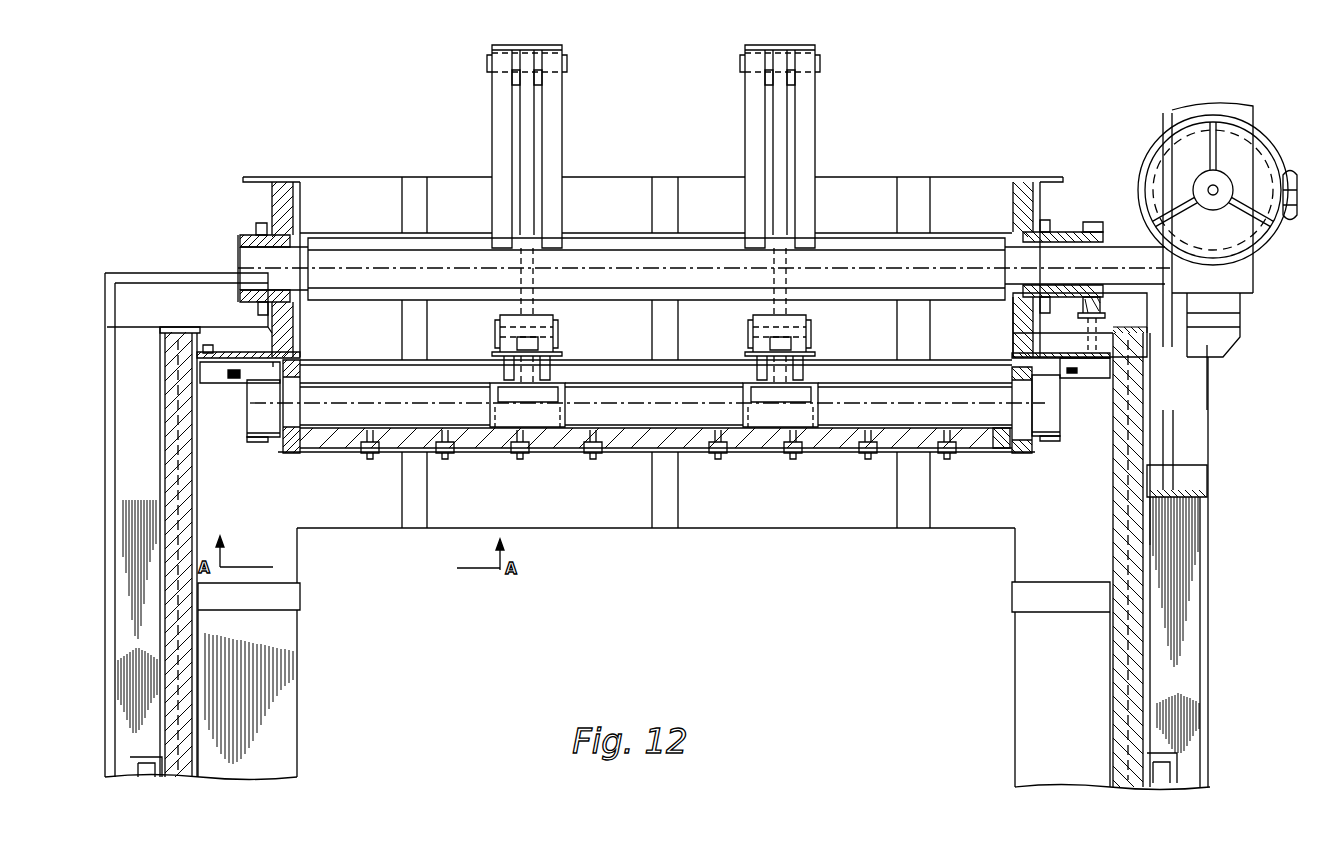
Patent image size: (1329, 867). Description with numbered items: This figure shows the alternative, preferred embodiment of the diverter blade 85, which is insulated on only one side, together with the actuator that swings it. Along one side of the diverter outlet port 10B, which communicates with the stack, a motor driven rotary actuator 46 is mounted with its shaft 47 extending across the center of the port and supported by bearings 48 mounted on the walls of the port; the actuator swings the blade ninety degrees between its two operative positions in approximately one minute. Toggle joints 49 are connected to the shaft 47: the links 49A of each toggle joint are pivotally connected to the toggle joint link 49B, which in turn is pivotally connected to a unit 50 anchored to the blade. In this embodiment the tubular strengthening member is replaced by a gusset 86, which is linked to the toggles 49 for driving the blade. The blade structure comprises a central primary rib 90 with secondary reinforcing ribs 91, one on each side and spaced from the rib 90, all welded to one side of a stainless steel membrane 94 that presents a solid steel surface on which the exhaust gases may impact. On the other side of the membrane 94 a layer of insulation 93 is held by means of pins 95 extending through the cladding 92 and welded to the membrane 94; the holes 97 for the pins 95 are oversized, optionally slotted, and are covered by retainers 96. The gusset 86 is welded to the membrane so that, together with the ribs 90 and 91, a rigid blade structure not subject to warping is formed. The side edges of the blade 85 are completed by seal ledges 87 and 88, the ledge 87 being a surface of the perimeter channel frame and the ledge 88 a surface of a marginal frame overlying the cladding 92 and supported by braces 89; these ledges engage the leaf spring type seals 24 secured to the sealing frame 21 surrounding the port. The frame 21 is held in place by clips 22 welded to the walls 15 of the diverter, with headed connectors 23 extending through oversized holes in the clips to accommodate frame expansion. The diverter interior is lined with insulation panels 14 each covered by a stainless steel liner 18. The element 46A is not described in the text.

The diverter outlet port 10B is at (362, 181).
The panels 14 is at (1127, 647).
The walls 15 is at (1147, 657).
The stainless steel liner 18 is at (1110, 688).
The sealing frame 21 is at (212, 384).
The clips 22 is at (198, 340).
The headed connectors 23 is at (210, 345).
The leaf spring type seals 24 is at (1045, 357).
The rotary actuator 46 is at (1152, 122).
The handwheel knob 46A is at (1293, 219).
The shaft 47 is at (873, 233).
The bearings 48 is at (253, 235).
The toggle joints 49 is at (565, 96).
The links 49A is at (552, 128).
The toggle joint link 49B is at (528, 158).
The unit 50 is at (558, 341).
The blade 85 is at (637, 458).
The gusset 86 is at (487, 410).
The seal ledge 87 is at (263, 442).
The seal ledge 88 is at (302, 359).
The braces 89 is at (278, 403).
The central primary rib 90 is at (378, 380).
The secondary reinforcing ribs 91 is at (445, 395).
The cladding 92 is at (765, 454).
The insulation 93 is at (830, 432).
The stainless steel membrane 94 is at (838, 451).
The pins 95 is at (520, 436).
The retainers 96 is at (580, 455).
The holes 97 is at (362, 460).